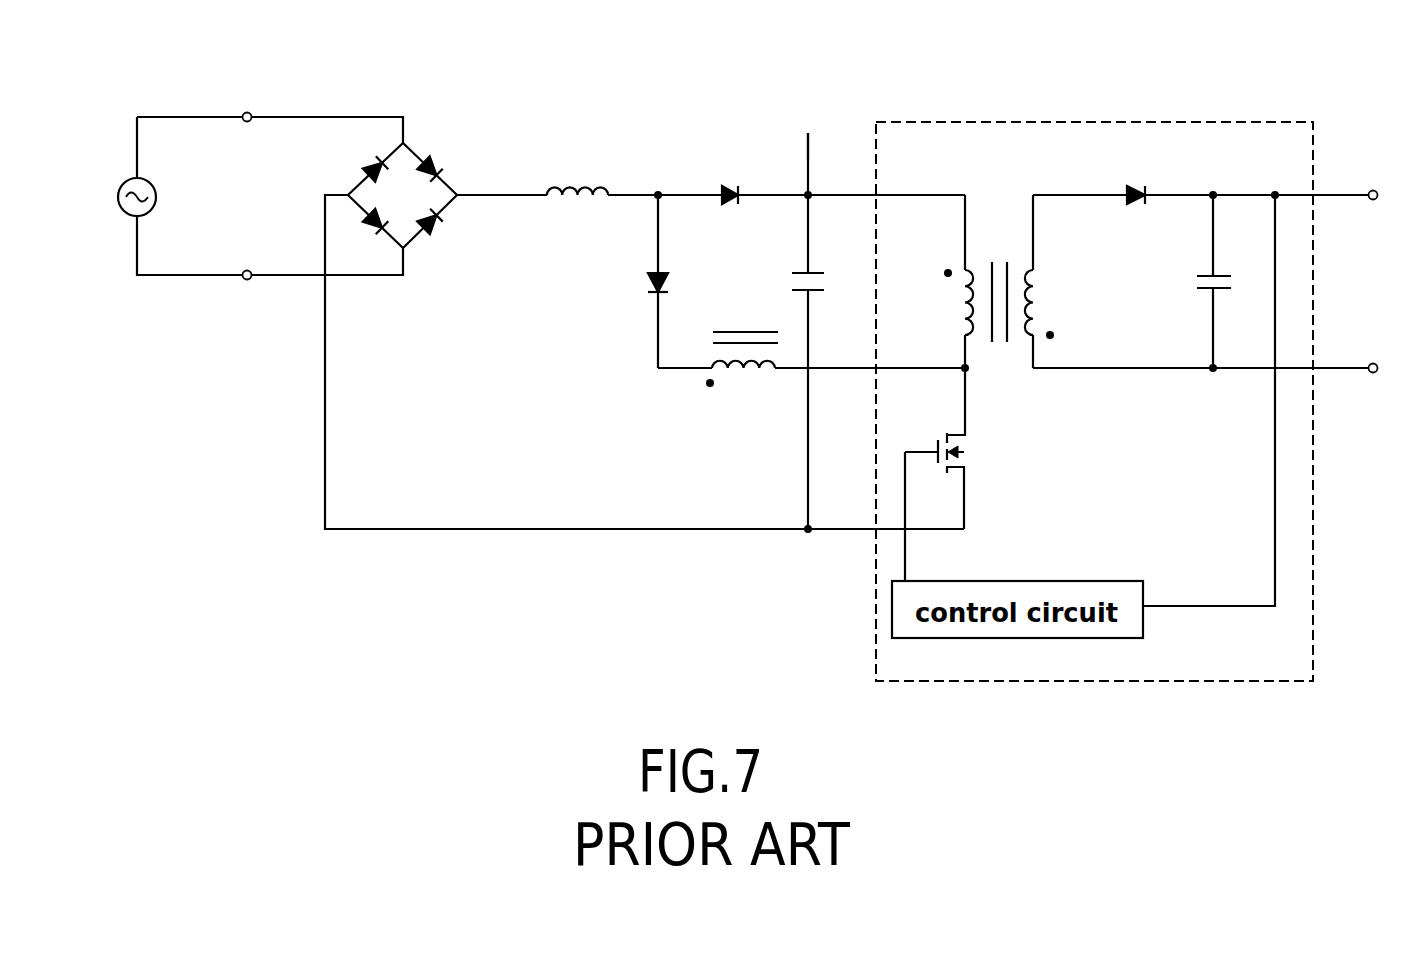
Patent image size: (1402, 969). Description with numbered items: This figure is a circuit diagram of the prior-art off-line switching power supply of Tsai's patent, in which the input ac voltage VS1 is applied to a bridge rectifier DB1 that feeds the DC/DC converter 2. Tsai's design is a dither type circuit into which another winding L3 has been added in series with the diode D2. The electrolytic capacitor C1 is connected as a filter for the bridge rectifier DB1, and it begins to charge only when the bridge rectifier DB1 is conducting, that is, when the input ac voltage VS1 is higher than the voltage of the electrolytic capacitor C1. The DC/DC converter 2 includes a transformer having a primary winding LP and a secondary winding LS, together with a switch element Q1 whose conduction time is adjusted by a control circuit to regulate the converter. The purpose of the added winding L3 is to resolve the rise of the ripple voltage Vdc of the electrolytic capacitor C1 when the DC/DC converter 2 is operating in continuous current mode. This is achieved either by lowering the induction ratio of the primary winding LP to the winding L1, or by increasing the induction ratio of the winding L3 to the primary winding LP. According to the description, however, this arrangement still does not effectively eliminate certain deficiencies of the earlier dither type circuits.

The DC/DC converter 2 is at (1173, 140).
The input ac voltage VS1 is at (107, 191).
The bridge rectifier DB1 is at (404, 159).
The winding L1 is at (577, 163).
The ripple voltage Vdc is at (775, 146).
The diode D2 is at (688, 288).
The electrolytic capacitor C1 is at (831, 288).
The winding L3 is at (743, 381).
The primary winding LP is at (939, 302).
The secondary winding LS is at (1059, 304).
The switch element Q1 is at (961, 481).